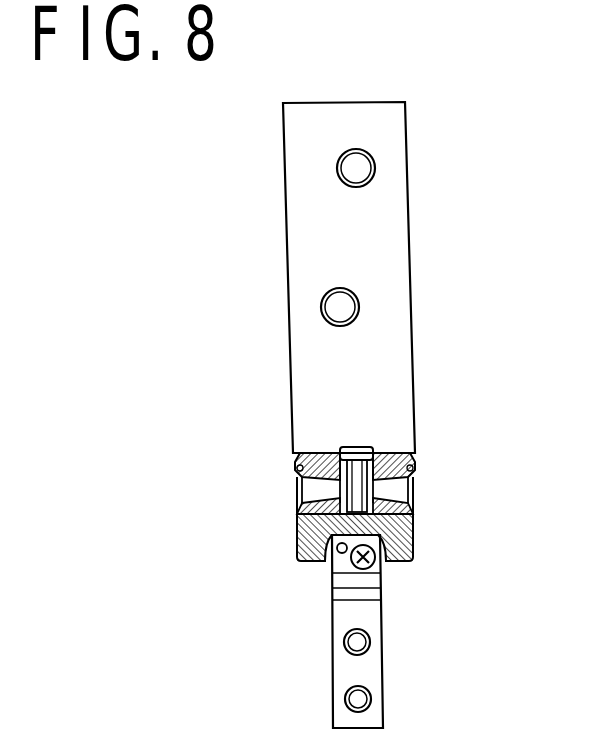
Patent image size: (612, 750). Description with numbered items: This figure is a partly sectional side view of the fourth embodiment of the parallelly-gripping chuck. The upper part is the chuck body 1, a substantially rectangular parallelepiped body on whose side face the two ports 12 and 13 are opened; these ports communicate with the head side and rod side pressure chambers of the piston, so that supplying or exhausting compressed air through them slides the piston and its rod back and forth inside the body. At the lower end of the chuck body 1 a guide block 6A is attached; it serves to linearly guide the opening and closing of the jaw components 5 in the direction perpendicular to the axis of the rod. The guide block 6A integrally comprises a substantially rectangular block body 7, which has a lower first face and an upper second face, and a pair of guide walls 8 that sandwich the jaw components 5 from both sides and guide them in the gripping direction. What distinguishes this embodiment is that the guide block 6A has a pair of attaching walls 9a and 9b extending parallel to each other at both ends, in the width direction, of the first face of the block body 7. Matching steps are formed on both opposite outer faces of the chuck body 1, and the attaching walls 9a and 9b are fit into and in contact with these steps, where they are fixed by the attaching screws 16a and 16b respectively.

The chuck body 1 is at (390, 237).
The port 12 is at (371, 168).
The port 13 is at (356, 307).
The attaching wall 9a is at (297, 465).
The attaching wall 9b is at (413, 465).
The attaching screw 16a is at (300, 492).
The attaching screw 16b is at (405, 492).
The block body 7 is at (413, 530).
The guide block 6A is at (344, 503).
The guide wall 8 is at (323, 563).
The jaw component 5 is at (375, 675).